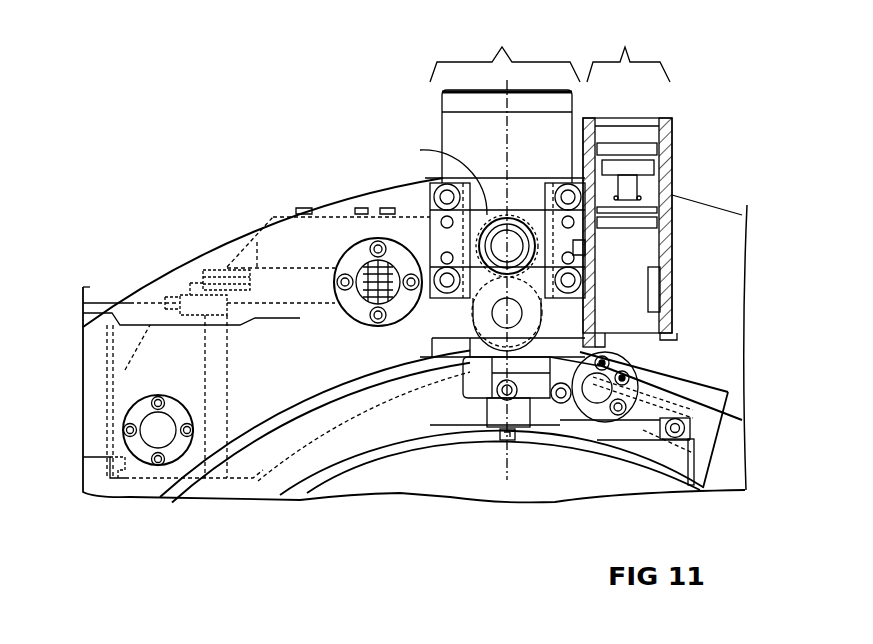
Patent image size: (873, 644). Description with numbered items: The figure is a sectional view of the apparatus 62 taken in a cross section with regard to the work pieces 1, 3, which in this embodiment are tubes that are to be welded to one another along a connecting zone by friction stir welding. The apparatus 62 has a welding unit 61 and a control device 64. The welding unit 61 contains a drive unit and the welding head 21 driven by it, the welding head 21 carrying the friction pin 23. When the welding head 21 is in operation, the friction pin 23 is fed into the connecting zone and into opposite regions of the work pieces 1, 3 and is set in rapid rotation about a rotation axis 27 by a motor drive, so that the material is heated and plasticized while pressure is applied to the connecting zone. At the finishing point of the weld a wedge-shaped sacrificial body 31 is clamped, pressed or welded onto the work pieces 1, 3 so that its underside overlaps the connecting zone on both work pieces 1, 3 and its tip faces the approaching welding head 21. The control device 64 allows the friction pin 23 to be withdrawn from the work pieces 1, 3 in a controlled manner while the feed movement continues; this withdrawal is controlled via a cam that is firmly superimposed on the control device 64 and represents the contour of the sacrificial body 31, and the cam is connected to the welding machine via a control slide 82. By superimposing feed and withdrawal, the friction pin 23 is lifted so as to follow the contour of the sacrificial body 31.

The work piece 1 is at (340, 465).
The work piece 3 is at (491, 463).
The welding head 21 is at (483, 420).
The friction pin 23 is at (517, 445).
The rotation axis 27 is at (500, 152).
The sacrificial body 31 is at (686, 443).
The welding unit 61 is at (512, 34).
The apparatus 62 is at (770, 138).
The control device 64 is at (640, 34).
The control slide 82 is at (490, 175).